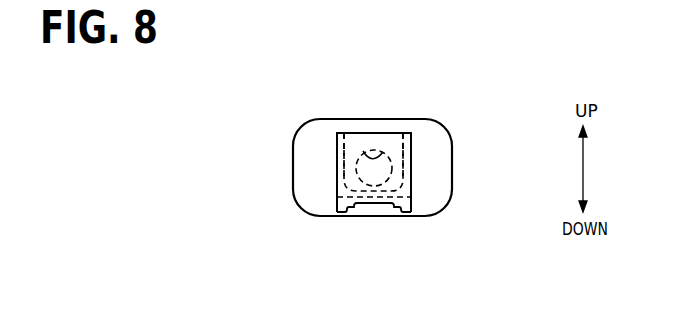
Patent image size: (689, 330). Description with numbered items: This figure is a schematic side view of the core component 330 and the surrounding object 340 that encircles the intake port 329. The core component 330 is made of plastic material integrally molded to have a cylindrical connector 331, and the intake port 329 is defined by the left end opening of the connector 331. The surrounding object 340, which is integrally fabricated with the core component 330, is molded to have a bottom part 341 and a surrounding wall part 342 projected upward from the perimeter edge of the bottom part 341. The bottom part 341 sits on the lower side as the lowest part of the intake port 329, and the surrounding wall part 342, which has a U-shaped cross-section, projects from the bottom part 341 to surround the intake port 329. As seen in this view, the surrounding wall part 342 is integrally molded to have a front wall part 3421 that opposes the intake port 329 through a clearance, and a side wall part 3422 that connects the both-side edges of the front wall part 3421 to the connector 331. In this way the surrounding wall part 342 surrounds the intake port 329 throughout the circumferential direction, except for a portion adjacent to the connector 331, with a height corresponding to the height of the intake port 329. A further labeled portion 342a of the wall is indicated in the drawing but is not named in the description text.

The intake port 329 is at (367, 133).
The core component 330 is at (403, 207).
The connector 331 is at (398, 133).
The surrounding object 340 is at (412, 163).
The bottom part 341 is at (373, 203).
The surrounding wall part 342 is at (352, 148).
The upper portion of bearing member 342a is at (356, 133).
The front wall part 3421 is at (345, 168).
The side wall part 3422 is at (404, 176).